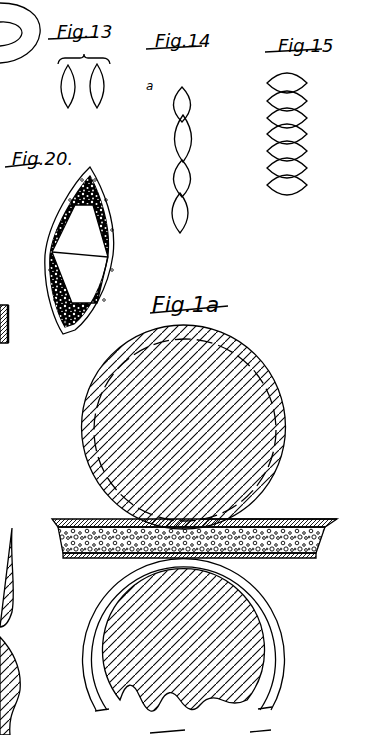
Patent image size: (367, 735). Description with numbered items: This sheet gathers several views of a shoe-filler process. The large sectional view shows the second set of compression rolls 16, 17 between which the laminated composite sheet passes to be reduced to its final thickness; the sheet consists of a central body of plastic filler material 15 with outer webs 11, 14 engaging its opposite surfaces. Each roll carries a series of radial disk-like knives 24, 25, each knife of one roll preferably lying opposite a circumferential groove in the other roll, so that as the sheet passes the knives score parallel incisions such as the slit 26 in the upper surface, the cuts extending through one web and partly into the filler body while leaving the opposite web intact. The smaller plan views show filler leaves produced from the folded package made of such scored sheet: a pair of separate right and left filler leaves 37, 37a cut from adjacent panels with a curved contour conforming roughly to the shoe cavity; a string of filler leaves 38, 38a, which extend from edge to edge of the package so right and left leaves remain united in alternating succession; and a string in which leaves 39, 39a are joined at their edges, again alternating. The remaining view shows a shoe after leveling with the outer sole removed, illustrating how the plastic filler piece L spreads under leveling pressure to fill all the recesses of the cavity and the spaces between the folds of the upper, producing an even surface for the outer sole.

In FIG. 13, the filler leaf 37 is at (62, 91).
In FIG. 13, the filler leaf 37a is at (104, 93).
In FIG. 14, the filler leaf 38 is at (184, 101).
In FIG. 14, the filler leaf 38a is at (185, 136).
In FIG. 15, the filler leaf 39 is at (300, 80).
In FIG. 15, the filler leaf 39a is at (292, 103).
In FIG. 20, the plastic filler piece L is at (110, 257).
In FIG. 1A, the compression roll 16 is at (233, 369).
In FIG. 1A, the radial disk-like knife 24 is at (286, 446).
In FIG. 1A, the web 14 is at (88, 518).
In FIG. 1A, the slit 26 is at (299, 521).
In FIG. 1A, the plastic filler material 15 is at (63, 541).
In FIG. 1A, the web 11 is at (77, 557).
In FIG. 1A, the radial disk-like knife 25 is at (279, 612).
In FIG. 1A, the compression roll 17 is at (262, 651).